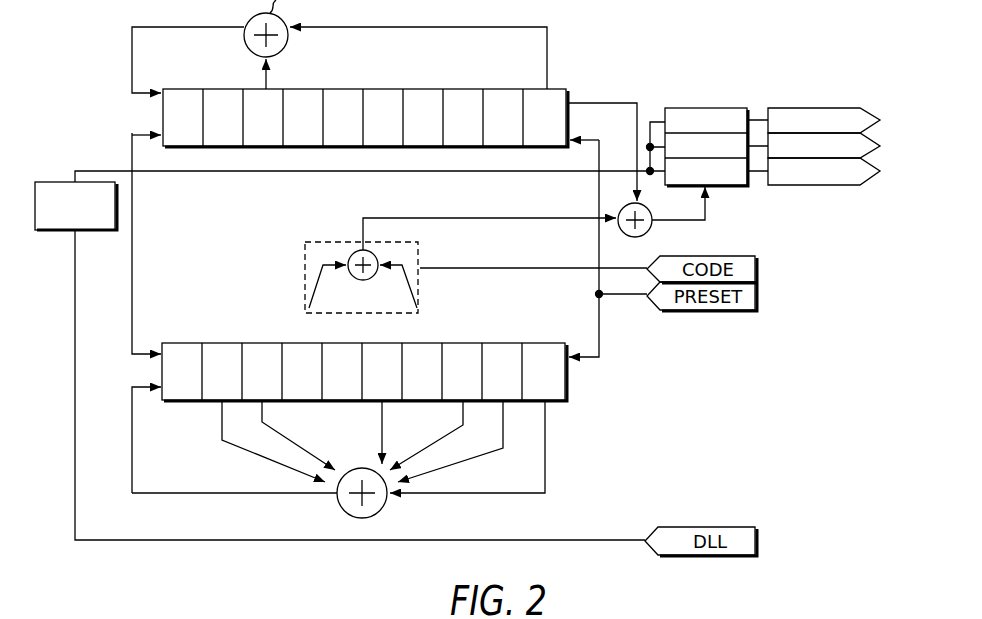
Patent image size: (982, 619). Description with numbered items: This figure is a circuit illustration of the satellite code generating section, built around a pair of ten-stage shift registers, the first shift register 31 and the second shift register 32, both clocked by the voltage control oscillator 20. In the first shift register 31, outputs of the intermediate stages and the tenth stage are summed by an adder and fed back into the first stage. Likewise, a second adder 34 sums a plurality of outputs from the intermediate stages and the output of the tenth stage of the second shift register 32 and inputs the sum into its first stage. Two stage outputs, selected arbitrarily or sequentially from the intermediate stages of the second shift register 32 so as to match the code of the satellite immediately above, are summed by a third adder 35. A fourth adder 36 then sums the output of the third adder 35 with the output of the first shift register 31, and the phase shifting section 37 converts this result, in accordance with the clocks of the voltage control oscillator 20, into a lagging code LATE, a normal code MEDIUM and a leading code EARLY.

The voltage control oscillator 20 is at (67, 182).
The first shift register 31 is at (425, 89).
The second shift register 32 is at (226, 343).
The second adder 34 is at (366, 518).
The third adder 35 is at (378, 262).
The fourth adder 36 is at (648, 229).
The phase shifting section 37 is at (690, 108).